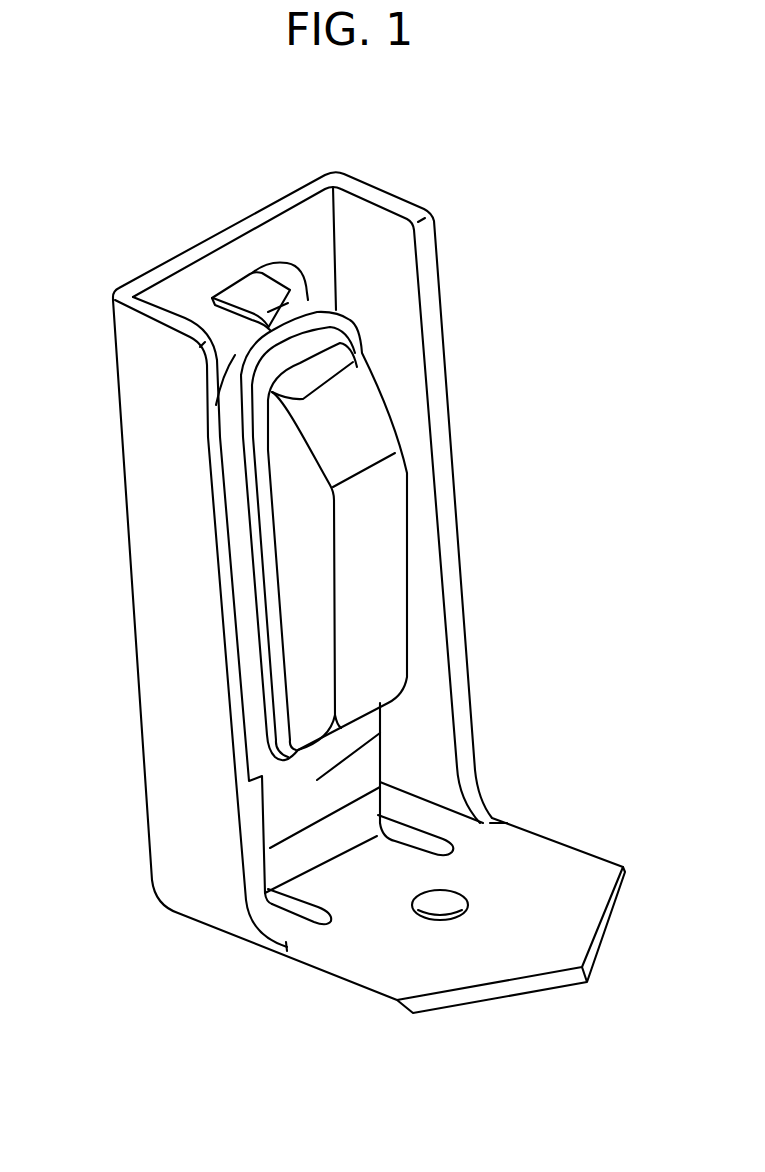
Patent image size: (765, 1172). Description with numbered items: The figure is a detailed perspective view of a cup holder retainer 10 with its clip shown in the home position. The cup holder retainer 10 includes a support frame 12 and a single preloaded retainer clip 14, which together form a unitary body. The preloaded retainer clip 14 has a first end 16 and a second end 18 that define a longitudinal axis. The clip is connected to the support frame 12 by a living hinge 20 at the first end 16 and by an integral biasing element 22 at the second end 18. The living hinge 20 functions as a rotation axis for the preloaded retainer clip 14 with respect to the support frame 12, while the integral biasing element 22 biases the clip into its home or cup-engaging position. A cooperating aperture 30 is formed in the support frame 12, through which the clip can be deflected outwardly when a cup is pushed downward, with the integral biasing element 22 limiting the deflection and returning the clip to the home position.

The cup holder retainer 10 is at (540, 226).
The support frame 12 is at (203, 907).
The preloaded retainer clip 14 is at (380, 555).
The first end 16 is at (345, 790).
The second end 18 is at (252, 381).
The living hinge 20 is at (318, 867).
The integral biasing element 22 is at (245, 292).
The cooperating aperture 30 is at (207, 327).